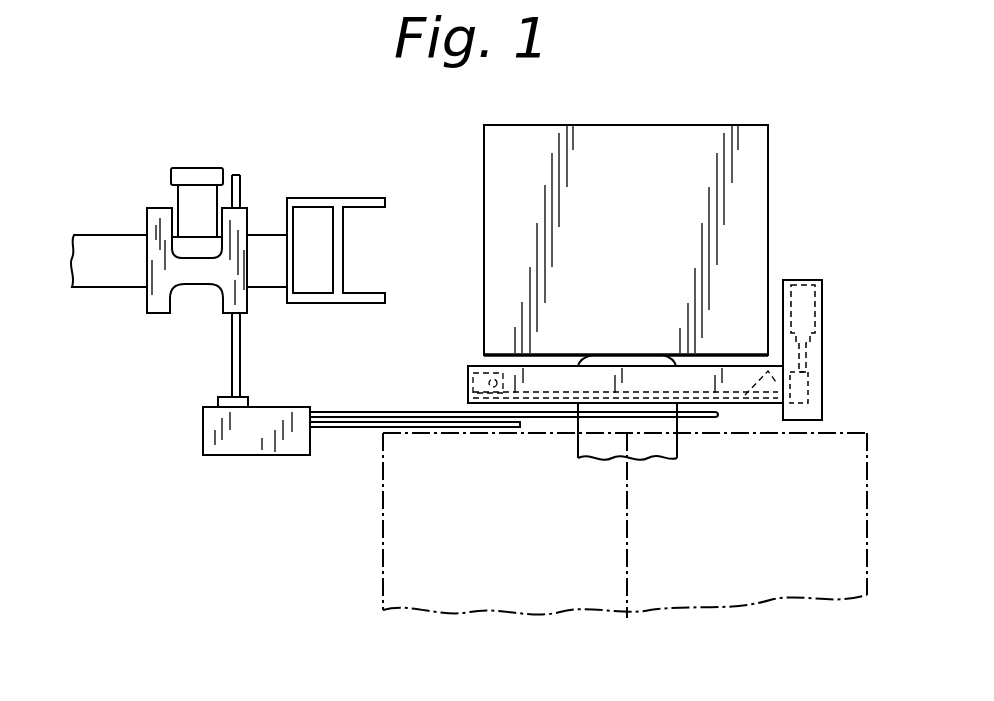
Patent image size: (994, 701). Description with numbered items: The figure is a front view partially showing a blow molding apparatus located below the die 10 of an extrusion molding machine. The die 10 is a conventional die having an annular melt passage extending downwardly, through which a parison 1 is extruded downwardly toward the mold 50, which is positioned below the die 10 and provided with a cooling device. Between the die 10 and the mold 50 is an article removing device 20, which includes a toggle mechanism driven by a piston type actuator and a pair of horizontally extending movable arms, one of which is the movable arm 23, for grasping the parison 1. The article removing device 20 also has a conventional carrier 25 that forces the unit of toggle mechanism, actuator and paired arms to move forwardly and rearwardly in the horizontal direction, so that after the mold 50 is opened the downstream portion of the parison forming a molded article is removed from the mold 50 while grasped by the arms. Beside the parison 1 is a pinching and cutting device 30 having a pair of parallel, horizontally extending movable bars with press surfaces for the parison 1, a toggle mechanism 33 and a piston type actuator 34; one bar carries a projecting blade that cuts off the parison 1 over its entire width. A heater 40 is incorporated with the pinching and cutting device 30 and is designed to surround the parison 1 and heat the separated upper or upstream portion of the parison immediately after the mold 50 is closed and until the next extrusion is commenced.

The parison 1 is at (577, 448).
The die 10 is at (768, 166).
The article removing device 20 is at (237, 458).
The movable arm 23 is at (359, 412).
The carrier 25 is at (266, 200).
The pinching and cutting device 30 is at (822, 357).
The toggle mechanism 33 is at (808, 380).
The piston type actuator 34 is at (800, 290).
The heater 40 is at (760, 375).
The mold 50 is at (390, 562).